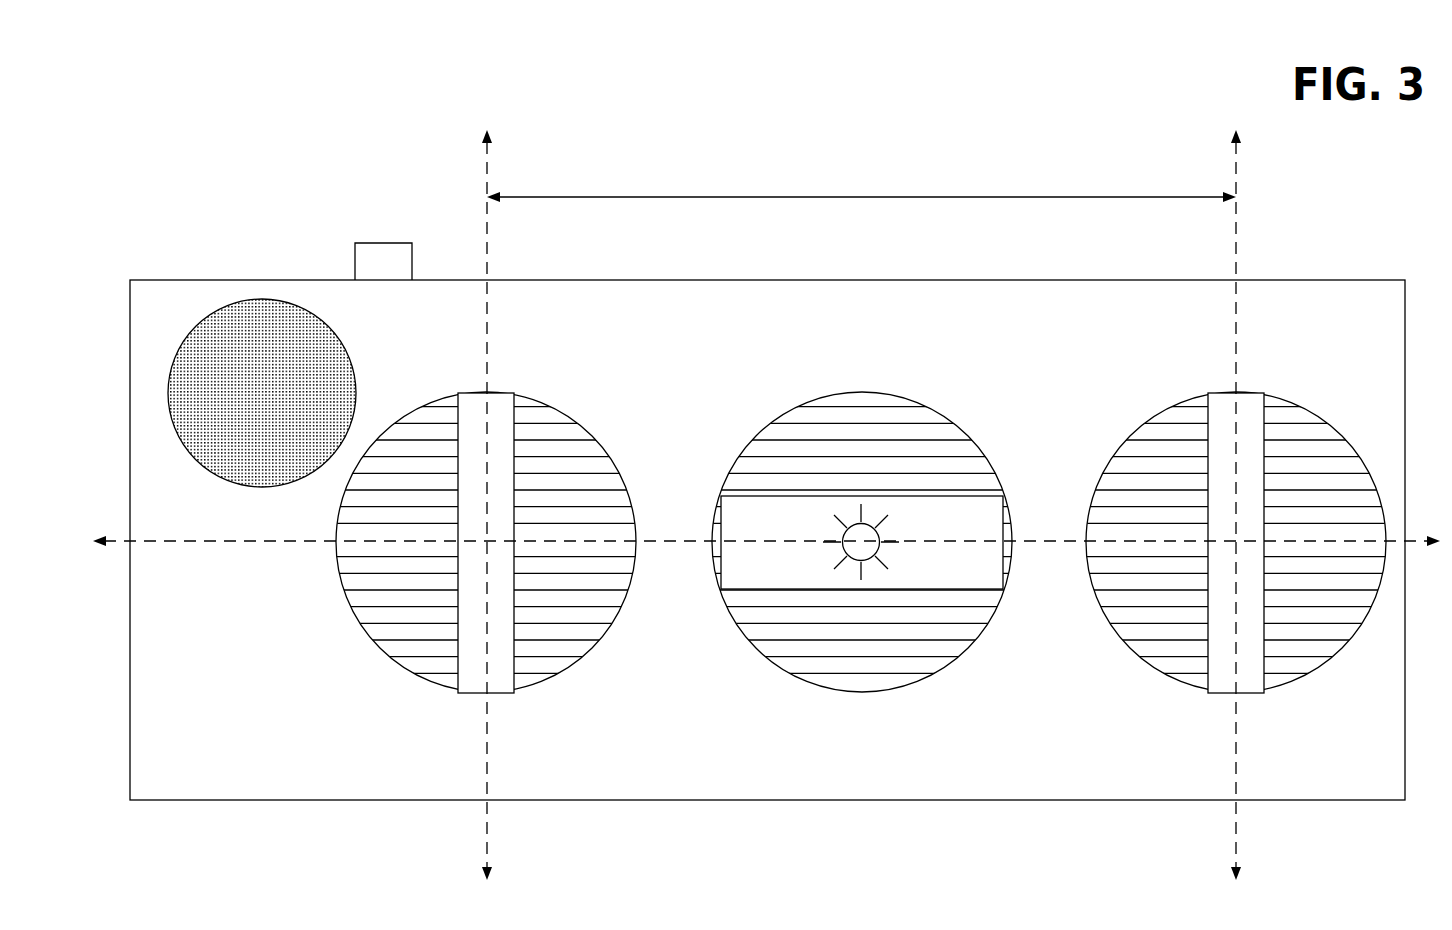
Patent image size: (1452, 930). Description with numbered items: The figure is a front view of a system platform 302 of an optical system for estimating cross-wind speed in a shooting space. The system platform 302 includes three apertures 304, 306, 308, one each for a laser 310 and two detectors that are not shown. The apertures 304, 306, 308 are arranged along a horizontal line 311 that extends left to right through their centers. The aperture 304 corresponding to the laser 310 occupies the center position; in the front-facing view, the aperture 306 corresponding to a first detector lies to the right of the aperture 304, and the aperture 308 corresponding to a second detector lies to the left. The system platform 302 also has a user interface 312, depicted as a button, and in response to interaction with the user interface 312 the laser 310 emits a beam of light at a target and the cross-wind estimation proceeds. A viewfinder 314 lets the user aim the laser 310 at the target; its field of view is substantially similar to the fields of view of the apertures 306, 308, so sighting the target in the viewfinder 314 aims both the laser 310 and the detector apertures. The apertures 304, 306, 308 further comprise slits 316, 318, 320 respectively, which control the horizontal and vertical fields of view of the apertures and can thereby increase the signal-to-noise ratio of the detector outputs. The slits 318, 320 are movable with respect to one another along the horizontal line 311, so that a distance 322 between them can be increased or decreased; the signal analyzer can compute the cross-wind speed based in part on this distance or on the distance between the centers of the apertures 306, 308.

The system platform 302 is at (1049, 157).
The aperture 304 is at (963, 650).
The aperture 306 is at (1130, 438).
The aperture 308 is at (590, 650).
The laser 310 is at (860, 523).
The horizontal line 311 is at (225, 542).
The user interface 312 is at (383, 243).
The viewfinder 314 is at (263, 298).
The slit 316 is at (862, 590).
The slit 318 is at (1235, 697).
The slit 320 is at (487, 695).
The distance 322 is at (730, 197).